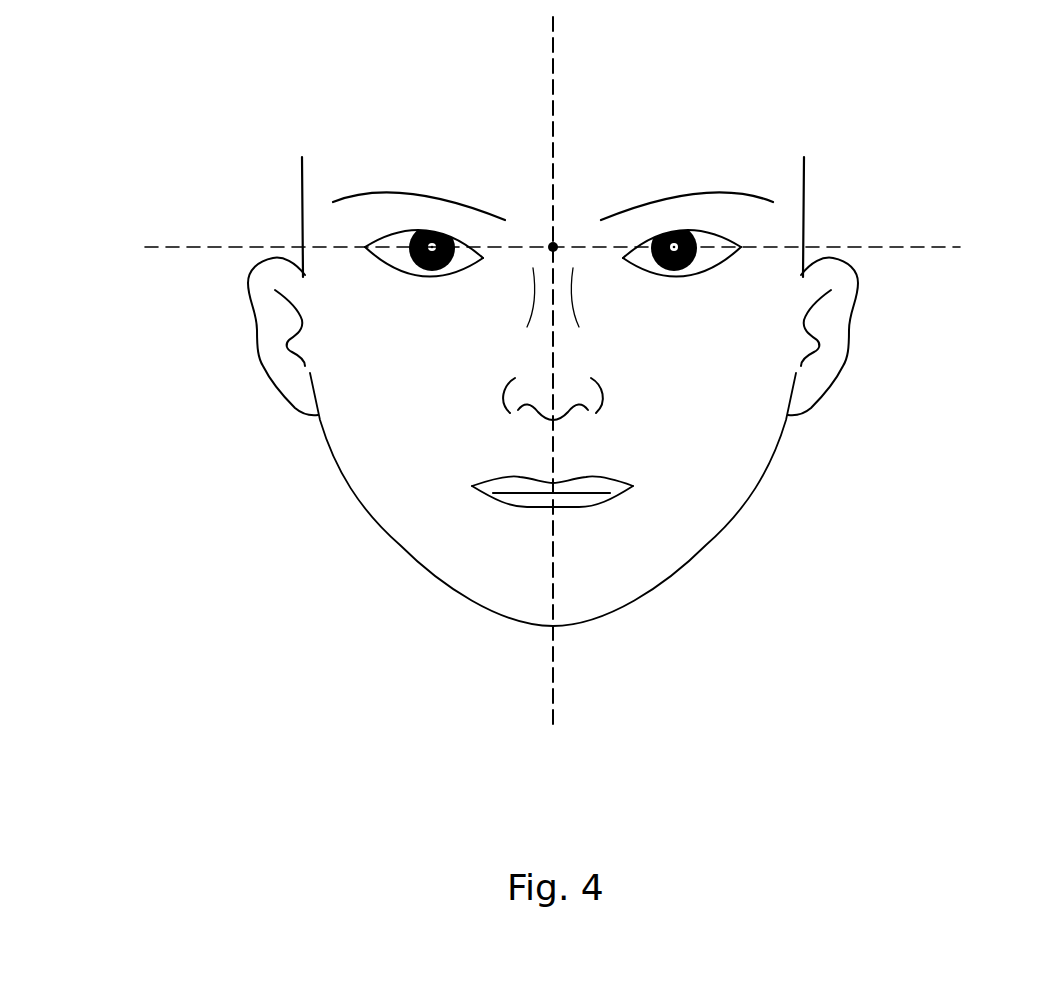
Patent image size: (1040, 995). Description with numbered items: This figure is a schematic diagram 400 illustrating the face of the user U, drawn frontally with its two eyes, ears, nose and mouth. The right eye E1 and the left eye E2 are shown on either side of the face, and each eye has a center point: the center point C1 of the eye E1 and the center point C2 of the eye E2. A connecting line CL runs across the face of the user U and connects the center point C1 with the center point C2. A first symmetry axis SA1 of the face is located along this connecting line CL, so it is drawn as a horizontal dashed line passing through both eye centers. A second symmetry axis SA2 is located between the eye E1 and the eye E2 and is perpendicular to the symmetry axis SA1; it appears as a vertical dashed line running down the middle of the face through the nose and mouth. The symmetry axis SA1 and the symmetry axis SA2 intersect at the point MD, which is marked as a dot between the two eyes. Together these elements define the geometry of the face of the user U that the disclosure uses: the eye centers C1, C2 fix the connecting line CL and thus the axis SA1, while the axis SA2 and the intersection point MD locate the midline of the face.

The face image 400 is at (83, 41).
The right eye E1 is at (395, 238).
The left eye E2 is at (703, 238).
The center point of the eye E1 C1 is at (432, 278).
The center point of the eye E2 C2 is at (675, 278).
The connecting line CL is at (605, 248).
The point MD is at (573, 232).
The symmetry axis SA1 is at (584, 248).
The symmetry axis SA2 is at (552, 390).
The user U is at (643, 603).